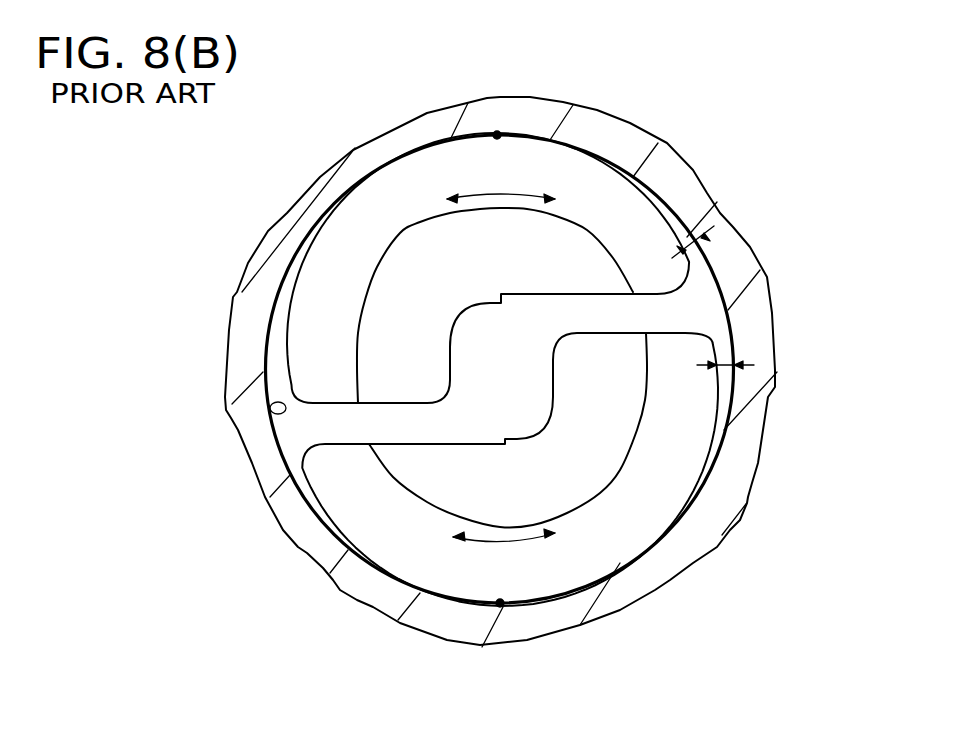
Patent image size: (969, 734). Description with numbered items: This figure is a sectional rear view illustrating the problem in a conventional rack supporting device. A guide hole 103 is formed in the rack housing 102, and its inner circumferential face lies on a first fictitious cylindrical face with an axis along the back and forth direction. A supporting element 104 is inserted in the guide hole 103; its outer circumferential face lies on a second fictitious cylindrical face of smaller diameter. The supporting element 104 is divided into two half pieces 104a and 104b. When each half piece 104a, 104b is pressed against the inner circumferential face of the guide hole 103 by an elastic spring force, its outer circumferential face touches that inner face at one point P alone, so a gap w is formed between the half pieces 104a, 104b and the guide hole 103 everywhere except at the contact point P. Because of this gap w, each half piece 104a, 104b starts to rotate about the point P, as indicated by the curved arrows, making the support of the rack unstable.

The rack housing 102 is at (693, 180).
The guide hole 103 is at (270, 405).
The supporting element 104 is at (502, 349).
The half piece 104a is at (433, 173).
The half piece 104b is at (612, 550).
The contact point P is at (500, 128).
The gap w is at (713, 263).